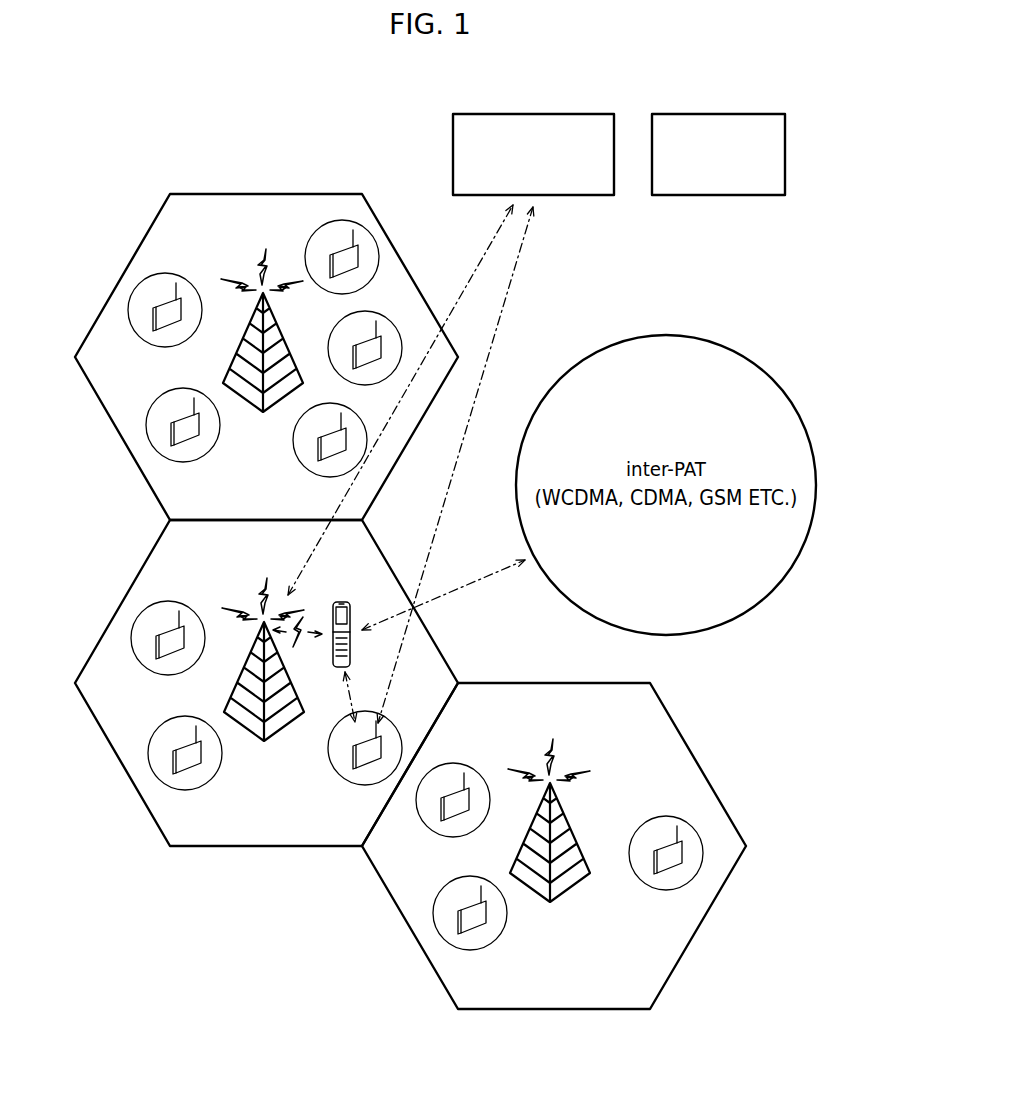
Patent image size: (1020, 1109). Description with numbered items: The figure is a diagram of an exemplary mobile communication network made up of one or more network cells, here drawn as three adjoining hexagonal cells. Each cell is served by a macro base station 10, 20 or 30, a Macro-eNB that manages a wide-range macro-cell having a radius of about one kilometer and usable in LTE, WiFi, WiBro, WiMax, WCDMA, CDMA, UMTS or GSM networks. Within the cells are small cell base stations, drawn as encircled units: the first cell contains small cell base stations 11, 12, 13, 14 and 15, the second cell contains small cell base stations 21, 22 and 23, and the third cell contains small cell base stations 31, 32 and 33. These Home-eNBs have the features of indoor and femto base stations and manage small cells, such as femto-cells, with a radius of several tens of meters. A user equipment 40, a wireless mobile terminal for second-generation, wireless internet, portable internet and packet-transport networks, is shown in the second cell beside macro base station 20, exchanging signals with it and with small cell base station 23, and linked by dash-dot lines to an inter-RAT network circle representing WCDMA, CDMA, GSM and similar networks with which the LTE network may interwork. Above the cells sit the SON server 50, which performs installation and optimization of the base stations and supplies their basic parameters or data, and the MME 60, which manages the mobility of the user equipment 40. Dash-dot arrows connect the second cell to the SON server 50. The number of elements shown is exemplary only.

The macro base station 10 is at (255, 405).
The small cell base station 11 is at (158, 310).
The small cell base station 12 is at (178, 421).
The small cell base station 13 is at (322, 449).
The small cell base station 14 is at (368, 350).
The small cell base station 15 is at (338, 250).
The macro base station 20 is at (256, 738).
The small cell base station 21 is at (165, 643).
The small cell base station 22 is at (180, 750).
The small cell base station 23 is at (352, 752).
The macro base station 30 is at (536, 896).
The small cell base station 31 is at (443, 813).
The small cell base station 32 is at (458, 918).
The small cell base station 33 is at (672, 866).
The user equipment 40 is at (338, 600).
The SON server 50 is at (532, 112).
The MME 60 is at (717, 112).